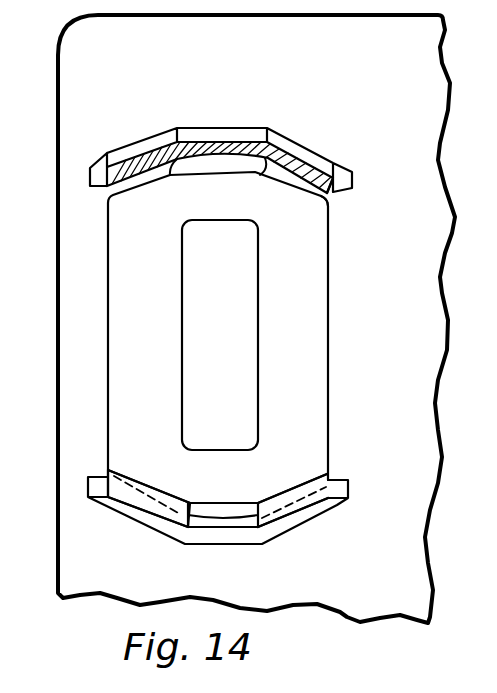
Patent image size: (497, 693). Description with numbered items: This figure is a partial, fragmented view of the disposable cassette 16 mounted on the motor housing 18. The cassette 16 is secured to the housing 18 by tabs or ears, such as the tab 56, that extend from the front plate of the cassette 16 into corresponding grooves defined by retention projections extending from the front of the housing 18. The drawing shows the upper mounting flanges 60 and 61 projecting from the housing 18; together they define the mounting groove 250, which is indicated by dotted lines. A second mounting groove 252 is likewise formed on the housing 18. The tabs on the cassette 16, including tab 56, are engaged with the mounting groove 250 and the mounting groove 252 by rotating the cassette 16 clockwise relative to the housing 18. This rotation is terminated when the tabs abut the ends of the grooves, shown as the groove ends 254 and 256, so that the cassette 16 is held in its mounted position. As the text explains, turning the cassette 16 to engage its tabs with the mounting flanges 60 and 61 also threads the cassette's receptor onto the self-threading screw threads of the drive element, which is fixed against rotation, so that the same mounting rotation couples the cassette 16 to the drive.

The housing 18 is at (57, 386).
The cassette 16 is at (236, 351).
The tab or ear 56 is at (260, 177).
The mounting groove 252 is at (219, 150).
The end of groove 256 is at (328, 198).
The end of groove 254 is at (105, 462).
The mounting groove 250 is at (307, 475).
The upper mounting flange 61 is at (162, 474).
The upper mounting flange 60 is at (280, 490).